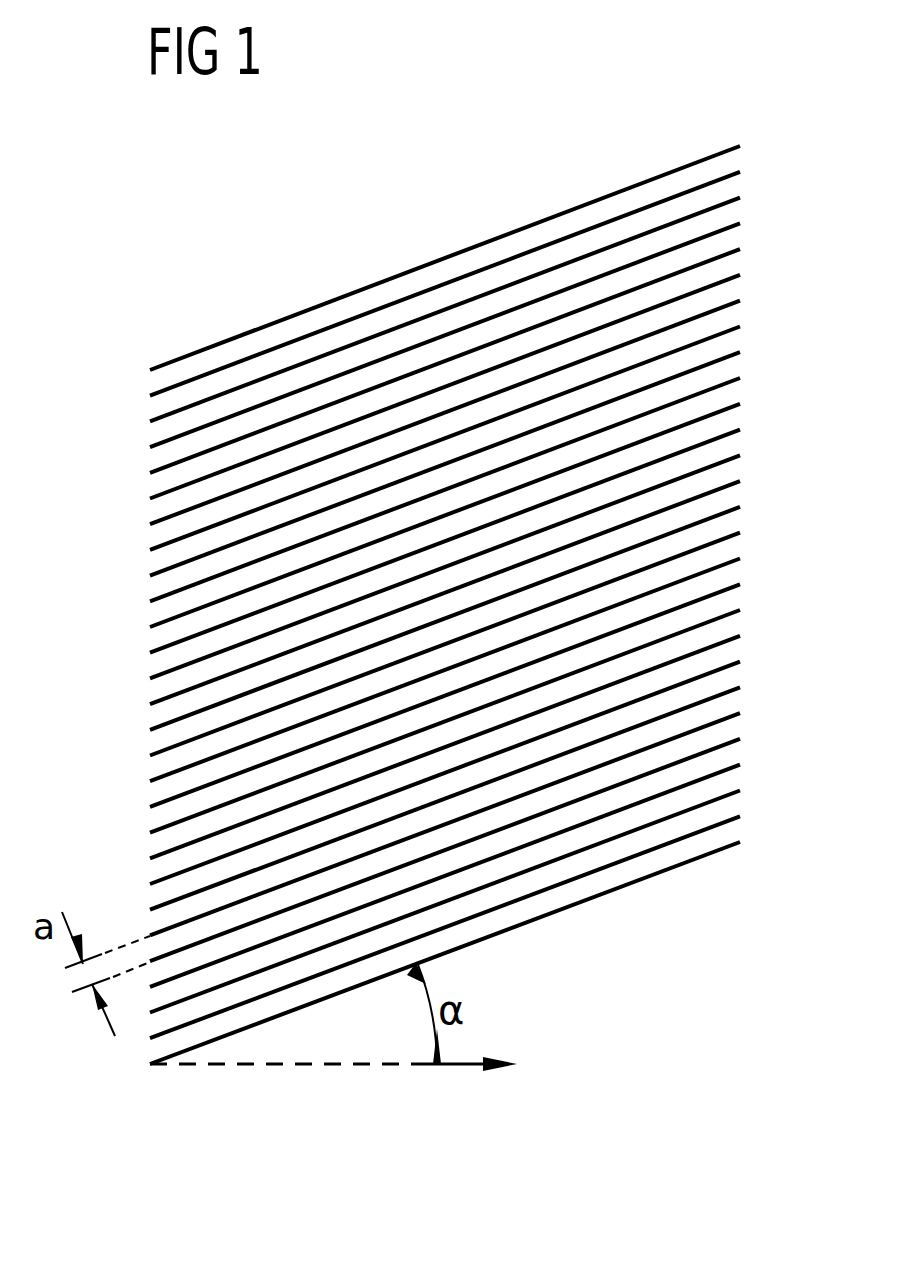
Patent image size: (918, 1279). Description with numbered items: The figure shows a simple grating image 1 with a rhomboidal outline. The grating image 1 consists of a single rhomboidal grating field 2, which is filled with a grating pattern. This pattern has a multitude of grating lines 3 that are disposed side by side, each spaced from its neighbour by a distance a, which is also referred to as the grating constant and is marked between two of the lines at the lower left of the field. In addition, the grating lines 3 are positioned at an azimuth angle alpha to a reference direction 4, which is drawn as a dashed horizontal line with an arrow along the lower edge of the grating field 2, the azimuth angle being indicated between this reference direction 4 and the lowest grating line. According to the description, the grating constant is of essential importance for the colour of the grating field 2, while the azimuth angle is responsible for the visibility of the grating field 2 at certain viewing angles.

The grating image 1 is at (568, 118).
The grating field 2 is at (153, 458).
The grating lines 3 is at (405, 272).
The reference direction 4 is at (338, 1070).